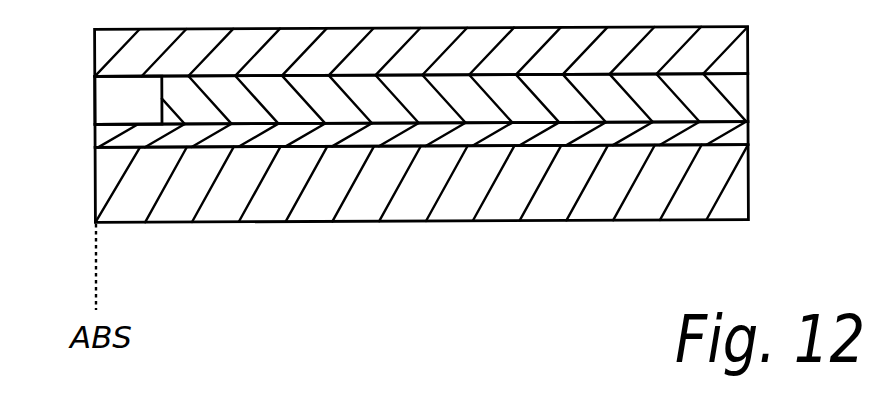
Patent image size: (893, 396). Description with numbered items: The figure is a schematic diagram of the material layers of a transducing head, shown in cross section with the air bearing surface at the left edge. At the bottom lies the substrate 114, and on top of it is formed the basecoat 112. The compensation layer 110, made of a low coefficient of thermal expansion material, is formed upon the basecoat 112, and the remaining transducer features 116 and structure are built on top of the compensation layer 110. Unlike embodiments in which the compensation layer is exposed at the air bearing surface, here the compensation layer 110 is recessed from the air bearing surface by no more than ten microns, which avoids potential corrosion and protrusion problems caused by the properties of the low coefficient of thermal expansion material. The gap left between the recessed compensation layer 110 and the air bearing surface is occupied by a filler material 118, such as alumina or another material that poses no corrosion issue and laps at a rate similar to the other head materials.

The remaining transducer features 116 is at (737, 60).
The compensation layer 110 is at (747, 92).
The filler material 118 is at (117, 95).
The basecoat 112 is at (750, 128).
The substrate 114 is at (720, 177).